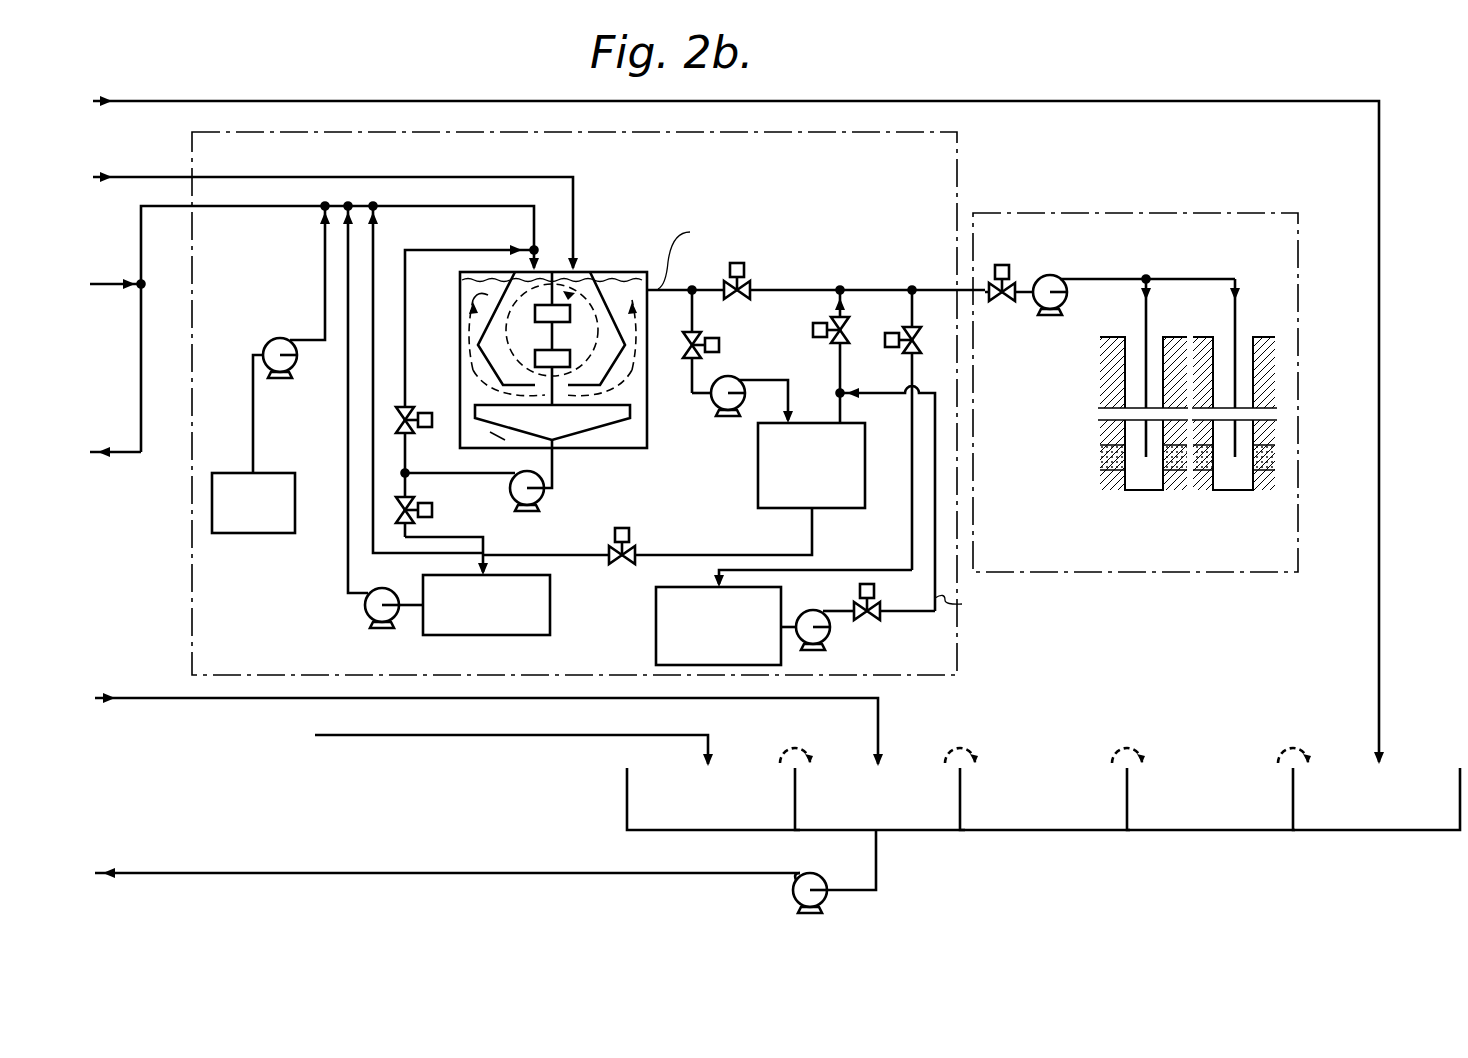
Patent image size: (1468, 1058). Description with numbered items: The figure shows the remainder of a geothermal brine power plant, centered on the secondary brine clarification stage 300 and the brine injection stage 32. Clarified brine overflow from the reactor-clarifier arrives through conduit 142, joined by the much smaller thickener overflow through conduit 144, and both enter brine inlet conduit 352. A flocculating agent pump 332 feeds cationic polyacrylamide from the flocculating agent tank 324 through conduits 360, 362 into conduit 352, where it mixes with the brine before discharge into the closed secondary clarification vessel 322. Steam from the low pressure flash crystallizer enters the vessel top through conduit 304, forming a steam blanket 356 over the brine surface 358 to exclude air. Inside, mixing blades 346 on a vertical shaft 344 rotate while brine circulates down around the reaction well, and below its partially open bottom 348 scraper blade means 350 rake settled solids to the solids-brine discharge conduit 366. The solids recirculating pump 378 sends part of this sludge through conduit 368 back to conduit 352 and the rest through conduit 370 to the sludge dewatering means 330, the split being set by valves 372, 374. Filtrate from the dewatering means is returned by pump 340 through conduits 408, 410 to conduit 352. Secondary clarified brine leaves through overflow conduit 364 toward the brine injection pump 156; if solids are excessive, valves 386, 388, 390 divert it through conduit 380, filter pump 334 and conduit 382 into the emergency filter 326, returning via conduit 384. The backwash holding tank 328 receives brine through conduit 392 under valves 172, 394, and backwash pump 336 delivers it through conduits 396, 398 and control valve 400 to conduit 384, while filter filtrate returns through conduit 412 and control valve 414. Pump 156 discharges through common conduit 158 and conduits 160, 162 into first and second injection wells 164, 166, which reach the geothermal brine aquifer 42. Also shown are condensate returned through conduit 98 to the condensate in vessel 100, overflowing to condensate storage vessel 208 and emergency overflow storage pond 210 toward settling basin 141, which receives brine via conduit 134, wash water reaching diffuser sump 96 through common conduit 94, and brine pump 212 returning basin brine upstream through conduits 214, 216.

The conduit 98 is at (141, 101).
The conduit 304 is at (119, 177).
The secondary brine clarification stage 300 is at (960, 162).
The conduit 352 is at (141, 232).
The reactor-clarifier overflow conduit 142 is at (102, 296).
The conduit 144 is at (122, 462).
The conduit 362 is at (325, 251).
The flocculating agent pump 332 is at (288, 340).
The conduit 360 is at (253, 405).
The flocculating agent tank 324 is at (262, 535).
The conduit 368 is at (428, 250).
The valve 372 is at (444, 388).
The valve 374 is at (432, 503).
The conduit 370 is at (436, 534).
The conduit 412 is at (422, 556).
The conduit 410 is at (348, 565).
The dewatering means brine overflow pump 340 is at (366, 607).
The conduit 408 is at (415, 592).
The sludge dewatering means 330 is at (490, 637).
The solids-brine discharge conduit 366 is at (545, 494).
The solids recirculating pump 378 is at (537, 508).
The secondary clarification vessel 322 is at (647, 437).
The steam blanket 356 is at (462, 276).
The brine surface 358 is at (470, 330).
The mixing blades 346 is at (537, 328).
The vertical shaft 344 is at (553, 343).
The partially open bottom 348 is at (600, 418).
The scraper blade means 350 is at (505, 440).
The overflow conduit 364 is at (660, 275).
The valve 386 is at (745, 268).
The valve 388 is at (713, 336).
The conduit 380 is at (703, 398).
The filter pump 334 is at (728, 376).
The conduit 382 is at (788, 406).
The valve 390 is at (818, 322).
The conduit 384 is at (840, 364).
The conduit 398 is at (856, 398).
The valve 394 is at (900, 350).
The conduit 392 is at (912, 545).
The emergency filter 326 is at (758, 476).
The control valve 414 is at (630, 530).
The backwash holding tank 328 is at (656, 622).
The backwash pump 336 is at (822, 648).
The conduit 396 is at (792, 608).
The control valve 400 is at (875, 620).
The injection stage 32 is at (1155, 213).
The valve 172 is at (1002, 265).
The brine injection pump 156 is at (1053, 275).
The common conduit 158 is at (1120, 274).
The conduit 160 is at (1146, 306).
The conduit 162 is at (1240, 312).
The first injection well 164 is at (1128, 336).
The second injection well 166 is at (1248, 338).
The geothermal brine aquifer 42 is at (1100, 457).
The diffuser sump 96 is at (627, 800).
The settling basin 141 is at (838, 830).
The emergency overflow storage pond 210 is at (1035, 830).
The condensate storage vessel 208 is at (1216, 830).
The condensate in vessel 100 is at (1408, 832).
The conduit 134 is at (130, 708).
The common conduit 94 is at (545, 735).
The conduit 216 is at (145, 873).
The brine pump 212 is at (793, 896).
The conduit 214 is at (882, 870).